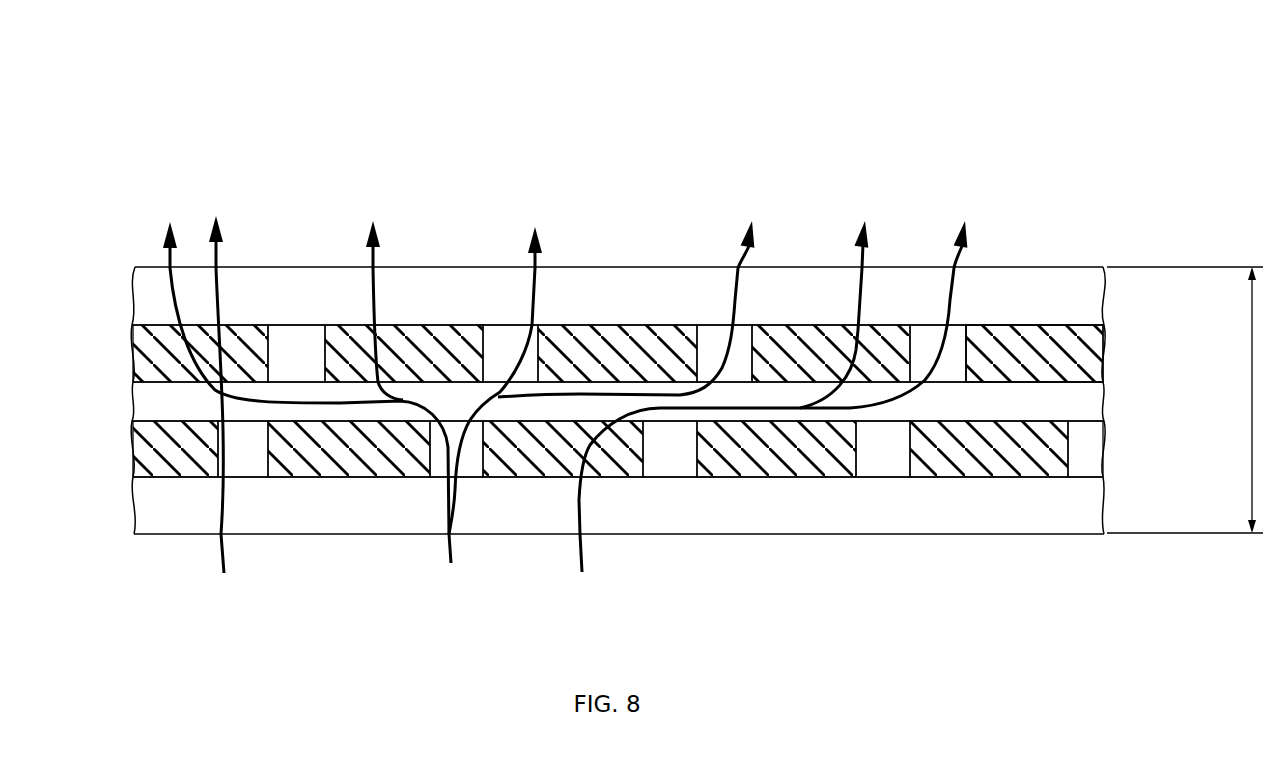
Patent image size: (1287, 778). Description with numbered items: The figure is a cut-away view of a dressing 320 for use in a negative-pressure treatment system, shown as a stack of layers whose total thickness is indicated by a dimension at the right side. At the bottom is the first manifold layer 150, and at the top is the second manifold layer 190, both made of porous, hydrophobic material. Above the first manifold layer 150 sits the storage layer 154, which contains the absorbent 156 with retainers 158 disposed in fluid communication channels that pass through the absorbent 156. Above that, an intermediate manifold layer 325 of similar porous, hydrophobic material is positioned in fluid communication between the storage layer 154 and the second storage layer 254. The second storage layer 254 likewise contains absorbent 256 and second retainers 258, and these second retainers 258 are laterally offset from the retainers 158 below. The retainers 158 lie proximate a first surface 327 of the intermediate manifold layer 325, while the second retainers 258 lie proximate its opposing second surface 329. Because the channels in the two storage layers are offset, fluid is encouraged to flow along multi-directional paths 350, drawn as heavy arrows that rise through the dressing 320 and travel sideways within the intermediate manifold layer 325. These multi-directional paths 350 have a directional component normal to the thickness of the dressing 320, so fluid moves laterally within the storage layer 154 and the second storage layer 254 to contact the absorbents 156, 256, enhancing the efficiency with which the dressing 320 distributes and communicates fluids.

The dressing 320 is at (403, 108).
The second manifold layer 190 is at (135, 296).
The second storage layer 254 is at (132, 345).
The absorbent 256 is at (257, 330).
The second retainers 258 is at (292, 333).
The intermediate manifold layer 325 is at (133, 402).
The second surface 329 is at (1106, 349).
The first surface 327 is at (1070, 436).
The storage layer 154 is at (131, 445).
The absorbent 156 is at (160, 470).
The retainers 158 is at (252, 462).
The first manifold layer 150 is at (136, 497).
The multi-directional paths 350 is at (212, 262).